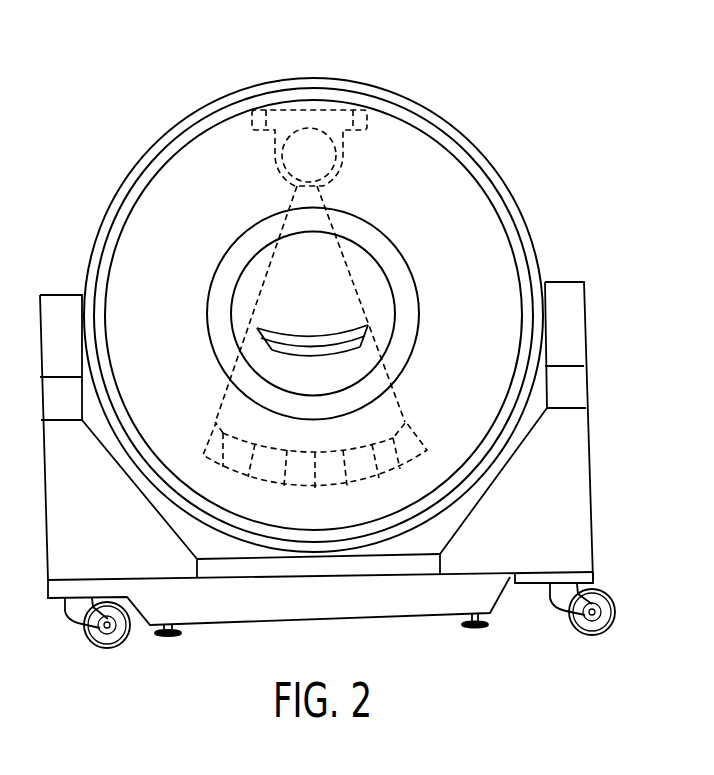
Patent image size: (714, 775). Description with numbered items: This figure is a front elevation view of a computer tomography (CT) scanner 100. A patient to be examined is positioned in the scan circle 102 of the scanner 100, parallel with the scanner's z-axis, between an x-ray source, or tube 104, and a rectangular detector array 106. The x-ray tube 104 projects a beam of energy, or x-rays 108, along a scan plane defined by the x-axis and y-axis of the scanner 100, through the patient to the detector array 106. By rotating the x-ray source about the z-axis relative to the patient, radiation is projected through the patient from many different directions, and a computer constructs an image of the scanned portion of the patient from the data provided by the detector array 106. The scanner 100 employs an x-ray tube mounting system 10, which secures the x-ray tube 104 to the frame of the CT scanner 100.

The computer tomography (CT) scanner 100 is at (483, 61).
The scan circle 102 is at (390, 341).
The x-ray source, or tube 104 is at (312, 128).
The rectangular detector array 106 is at (314, 499).
The beam of energy, or x-rays 108 is at (358, 287).
The x-ray tube mounting system 10 is at (266, 150).